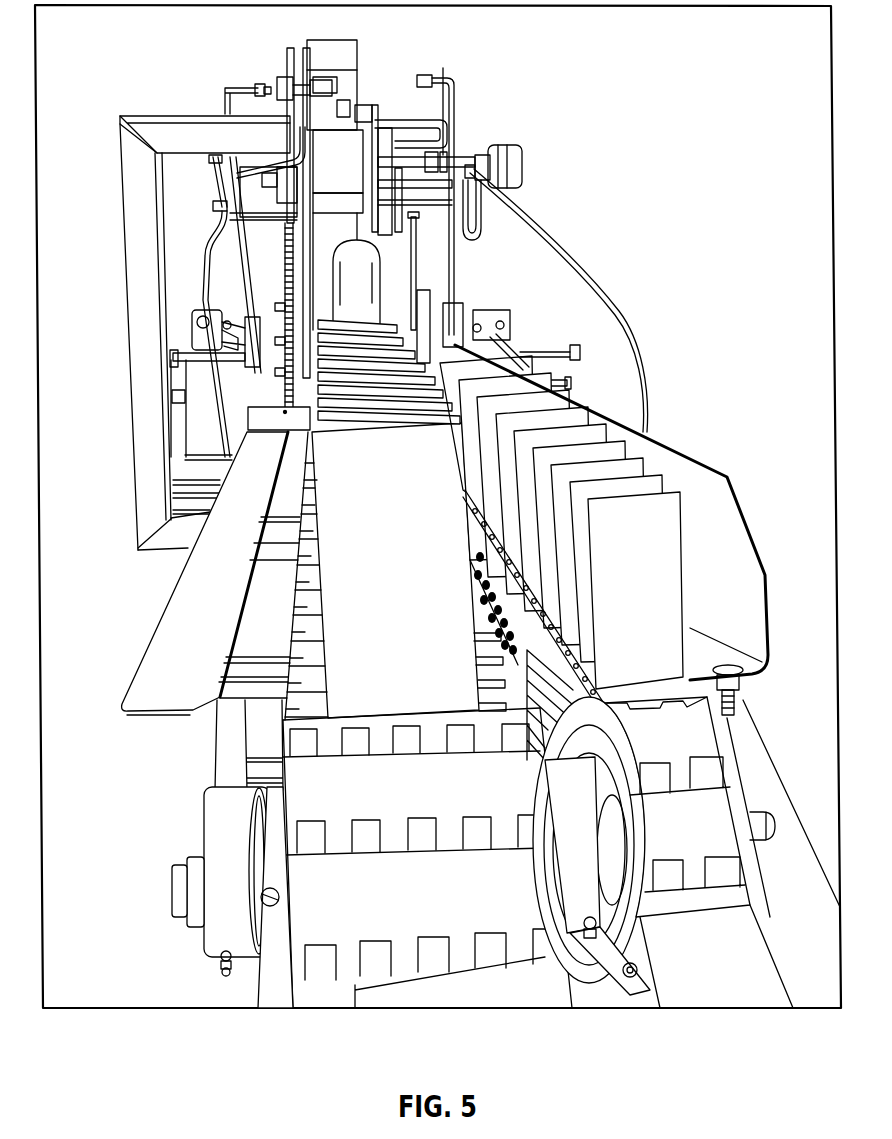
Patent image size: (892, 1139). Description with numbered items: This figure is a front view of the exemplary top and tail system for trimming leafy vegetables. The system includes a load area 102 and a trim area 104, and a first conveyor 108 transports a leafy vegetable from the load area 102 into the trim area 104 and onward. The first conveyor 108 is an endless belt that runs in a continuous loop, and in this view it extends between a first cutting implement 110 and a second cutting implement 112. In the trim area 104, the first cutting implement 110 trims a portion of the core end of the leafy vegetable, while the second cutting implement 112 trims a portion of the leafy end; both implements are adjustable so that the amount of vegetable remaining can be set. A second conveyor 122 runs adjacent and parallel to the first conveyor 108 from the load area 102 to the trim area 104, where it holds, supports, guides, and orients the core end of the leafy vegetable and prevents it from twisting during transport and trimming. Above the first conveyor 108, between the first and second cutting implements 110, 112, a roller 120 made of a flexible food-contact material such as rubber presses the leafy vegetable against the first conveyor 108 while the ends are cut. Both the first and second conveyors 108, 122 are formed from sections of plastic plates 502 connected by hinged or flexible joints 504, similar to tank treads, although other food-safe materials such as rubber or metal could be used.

The load area 102 is at (155, 517).
The trim area 104 is at (232, 243).
The first conveyor 108 is at (462, 995).
The first cutting implement 110 is at (416, 238).
The second cutting implement 112 is at (287, 222).
The roller 120 is at (353, 253).
The second conveyor 122 is at (716, 993).
The plastic plates 502 is at (300, 925).
The hinged or flexible joints 504 is at (288, 845).